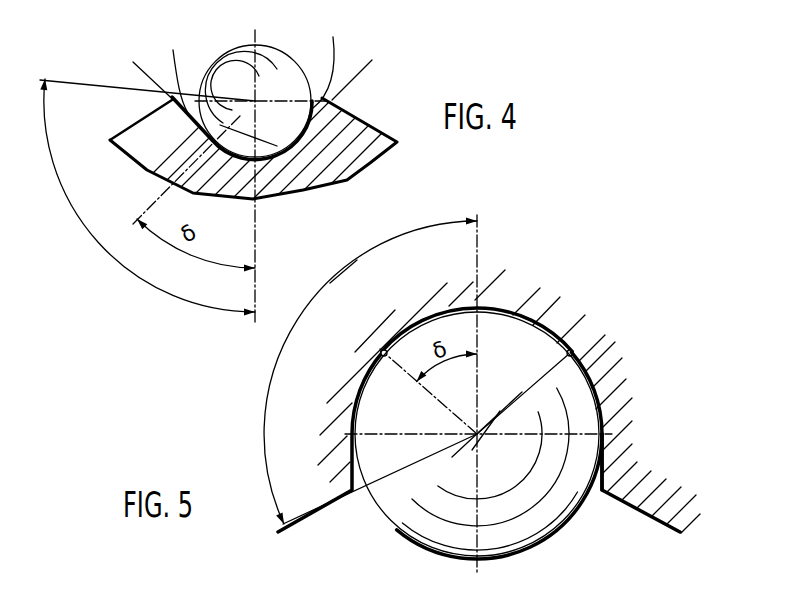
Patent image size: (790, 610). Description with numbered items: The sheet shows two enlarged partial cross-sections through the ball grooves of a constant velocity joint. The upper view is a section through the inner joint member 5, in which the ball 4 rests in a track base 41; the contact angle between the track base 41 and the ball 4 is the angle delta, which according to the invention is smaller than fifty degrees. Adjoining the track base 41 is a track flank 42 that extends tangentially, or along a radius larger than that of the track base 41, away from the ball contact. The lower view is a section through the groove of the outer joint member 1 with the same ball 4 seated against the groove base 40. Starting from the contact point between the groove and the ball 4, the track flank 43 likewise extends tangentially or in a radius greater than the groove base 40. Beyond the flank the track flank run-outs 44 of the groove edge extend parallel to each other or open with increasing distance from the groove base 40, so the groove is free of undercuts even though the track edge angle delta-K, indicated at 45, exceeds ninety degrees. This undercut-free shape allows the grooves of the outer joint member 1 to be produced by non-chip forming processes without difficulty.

In FIG. 5, the outer joint member 1 is at (676, 512).
In FIG. 4, the ball 4 is at (268, 70).
In FIG. 5, the ball 4 is at (528, 363).
In FIG. 4, the inner joint member 5 is at (360, 130).
In FIG. 5, the groove base 40 is at (495, 355).
In FIG. 4, the track base 41 is at (273, 146).
In FIG. 4, the track flank 42 is at (320, 98).
In FIG. 5, the track flank 43 is at (607, 403).
In FIG. 5, the track flank run-out 44 is at (606, 457).
In FIG. 4, the track edge angle 45 is at (92, 240).
In FIG. 5, the track edge angle 45 is at (290, 322).